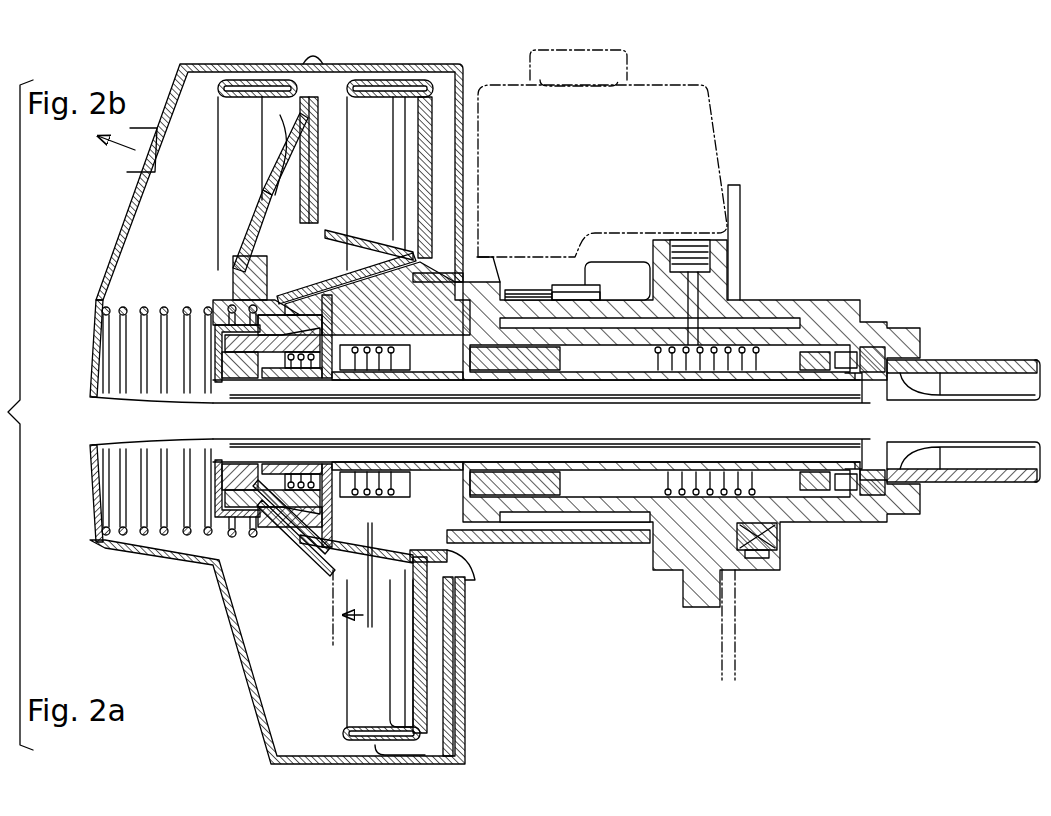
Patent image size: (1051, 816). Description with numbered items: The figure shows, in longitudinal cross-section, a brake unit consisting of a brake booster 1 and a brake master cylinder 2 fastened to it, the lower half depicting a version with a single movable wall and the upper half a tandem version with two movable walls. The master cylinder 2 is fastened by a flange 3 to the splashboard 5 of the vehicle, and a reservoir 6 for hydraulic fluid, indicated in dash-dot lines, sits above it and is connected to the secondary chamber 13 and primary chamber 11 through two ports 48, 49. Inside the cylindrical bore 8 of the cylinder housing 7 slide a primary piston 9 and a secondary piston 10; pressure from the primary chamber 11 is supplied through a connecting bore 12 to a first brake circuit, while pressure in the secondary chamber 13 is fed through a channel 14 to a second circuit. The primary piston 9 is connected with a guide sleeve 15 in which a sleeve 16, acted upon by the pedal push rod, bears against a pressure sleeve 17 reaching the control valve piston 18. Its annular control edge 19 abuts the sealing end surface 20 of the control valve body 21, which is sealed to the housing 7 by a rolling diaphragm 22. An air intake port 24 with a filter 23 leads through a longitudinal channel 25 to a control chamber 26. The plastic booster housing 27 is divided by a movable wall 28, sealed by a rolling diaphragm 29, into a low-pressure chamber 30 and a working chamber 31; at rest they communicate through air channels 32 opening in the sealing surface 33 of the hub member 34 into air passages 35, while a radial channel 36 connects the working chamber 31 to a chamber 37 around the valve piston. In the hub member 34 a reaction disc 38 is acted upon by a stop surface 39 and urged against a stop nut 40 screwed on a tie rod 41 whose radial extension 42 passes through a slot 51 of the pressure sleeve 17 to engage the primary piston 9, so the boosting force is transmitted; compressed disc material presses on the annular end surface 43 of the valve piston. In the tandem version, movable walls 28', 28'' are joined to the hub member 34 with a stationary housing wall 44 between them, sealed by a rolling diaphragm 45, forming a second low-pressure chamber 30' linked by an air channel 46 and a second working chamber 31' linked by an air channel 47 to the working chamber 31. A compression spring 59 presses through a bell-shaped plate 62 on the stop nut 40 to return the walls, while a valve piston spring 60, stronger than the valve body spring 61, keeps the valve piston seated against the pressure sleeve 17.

In FIG. 2a, the brake booster 1 is at (243, 718).
In FIG. 2a, the brake master cylinder 2 is at (552, 548).
In FIG. 2a, the flange 3 is at (705, 585).
In FIG. 2b, the splashboard 5 is at (740, 193).
In FIG. 2b, the reservoir 6 is at (692, 100).
In FIG. 2a, the cylinder housing 7 is at (650, 543).
In FIG. 2b, the cylindrical bore 8 is at (752, 353).
In FIG. 2b, the primary piston 9 is at (835, 358).
In FIG. 2a, the secondary piston 10 is at (602, 520).
In FIG. 2a, the primary chamber 11 is at (718, 497).
In FIG. 2b, the connecting bore 12 is at (688, 240).
In FIG. 2a, the secondary chamber 13 is at (483, 497).
In FIG. 2b, the channel 14 is at (500, 283).
In FIG. 2b, the guide sleeve 15 is at (1007, 360).
In FIG. 2a, the guide sleeve 15 is at (963, 462).
In FIG. 2a, the sleeve 16 is at (893, 495).
In FIG. 2a, the pressure sleeve 17 is at (810, 492).
In FIG. 2a, the control valve piston 18 is at (225, 520).
In FIG. 2a, the annular control edge 19 is at (262, 560).
In FIG. 2a, the sealing end surface 20 is at (275, 575).
In FIG. 2a, the control valve body 21 is at (290, 590).
In FIG. 2a, the rolling diaphragm 22 is at (372, 590).
In FIG. 2a, the filter 23 is at (753, 552).
In FIG. 2a, the air intake port 24 is at (763, 552).
In FIG. 2a, the longitudinal channel 25 is at (615, 543).
In FIG. 2a, the control chamber 26 is at (474, 578).
In FIG. 2a, the booster housing 27 is at (365, 765).
In FIG. 2a, the movable wall 28 is at (480, 666).
In FIG. 2b, the movable wall 28' is at (486, 170).
In FIG. 2b, the movable wall 28'' is at (267, 158).
In FIG. 2a, the rolling diaphragm 29 is at (392, 748).
In FIG. 2b, the low-pressure chamber 30 is at (274, 182).
In FIG. 2a, the low-pressure chamber 30 is at (277, 659).
In FIG. 2b, the second low-pressure chamber 30' is at (390, 152).
In FIG. 2b, the working chamber 31 is at (516, 177).
In FIG. 2a, the working chamber 31 is at (461, 645).
In FIG. 2b, the second working chamber 31' is at (254, 193).
In FIG. 2b, the air channels 32 is at (263, 293).
In FIG. 2b, the sealing surface 33 is at (452, 242).
In FIG. 2a, the hub member 34 is at (170, 560).
In FIG. 2b, the air passages 35 is at (322, 276).
In FIG. 2a, the radial channel 36 is at (250, 548).
In FIG. 2b, the chamber 37 is at (327, 378).
In FIG. 2a, the reaction disc 38 is at (247, 465).
In FIG. 2a, the stop surface 39 is at (290, 478).
In FIG. 2a, the stop nut 40 is at (222, 483).
In FIG. 2b, the tie rod 41 is at (660, 358).
In FIG. 2a, the tie rod 41 is at (490, 492).
In FIG. 2b, the radial extension 42 is at (852, 368).
In FIG. 2b, the annular end surface 43 is at (253, 378).
In FIG. 2b, the stationary housing wall 44 is at (320, 128).
In FIG. 2b, the rolling diaphragm 45 is at (328, 242).
In FIG. 2b, the air channel 46 is at (265, 255).
In FIG. 2b, the air channel 47 is at (233, 267).
In FIG. 2b, the port 48 is at (550, 297).
In FIG. 2b, the port 49 is at (576, 296).
In FIG. 2b, the slot 51 is at (878, 358).
In FIG. 2b, the compression spring 59 is at (160, 307).
In FIG. 2b, the valve piston spring 60 is at (300, 368).
In FIG. 2b, the valve body spring 61 is at (369, 370).
In FIG. 2b, the bell-shaped plate 62 is at (215, 340).